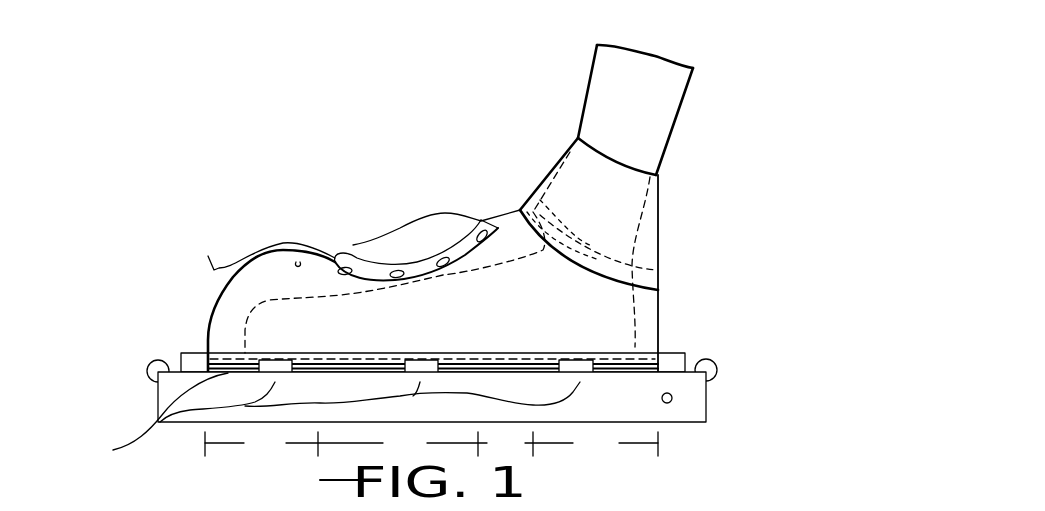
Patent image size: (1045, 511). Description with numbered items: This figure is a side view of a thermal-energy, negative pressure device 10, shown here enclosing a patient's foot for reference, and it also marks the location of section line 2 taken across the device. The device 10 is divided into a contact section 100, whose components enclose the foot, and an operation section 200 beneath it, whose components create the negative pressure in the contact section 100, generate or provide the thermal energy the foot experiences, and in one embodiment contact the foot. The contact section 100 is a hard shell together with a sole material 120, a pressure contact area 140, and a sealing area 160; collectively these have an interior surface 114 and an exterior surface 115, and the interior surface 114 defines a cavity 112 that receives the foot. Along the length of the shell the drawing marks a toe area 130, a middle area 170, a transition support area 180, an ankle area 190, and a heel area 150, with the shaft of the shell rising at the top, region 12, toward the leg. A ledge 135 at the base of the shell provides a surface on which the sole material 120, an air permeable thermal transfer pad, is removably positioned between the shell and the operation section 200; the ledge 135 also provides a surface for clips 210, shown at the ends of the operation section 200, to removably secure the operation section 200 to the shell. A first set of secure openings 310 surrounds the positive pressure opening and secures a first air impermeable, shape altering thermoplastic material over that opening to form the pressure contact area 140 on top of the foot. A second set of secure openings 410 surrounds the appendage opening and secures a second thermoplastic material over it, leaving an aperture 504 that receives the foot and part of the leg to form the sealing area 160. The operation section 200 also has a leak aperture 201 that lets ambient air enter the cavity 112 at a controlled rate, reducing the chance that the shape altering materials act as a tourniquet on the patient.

The section line 2- 2 is at (737, 116).
The thermal-energy, negative pressure device 10 is at (757, 231).
The boot shaft top / leg 12 is at (595, 62).
The contact section 100 is at (128, 150).
The cavity 112 is at (298, 262).
The interior surface 114 is at (216, 335).
The exterior surface 115 is at (218, 338).
The sole material 120 is at (668, 362).
The toe area 130 is at (259, 343).
The ledge 135 is at (645, 367).
The pressure contact area 140 is at (353, 247).
The heel area 150 is at (661, 288).
The sealing area 160 is at (660, 178).
The middle area 170 is at (431, 444).
The transition support area 180 is at (507, 213).
The ankle area 190 is at (596, 443).
The operation section 200 is at (140, 373).
The leak aperture 201 is at (669, 402).
The clips 210 is at (716, 375).
The first set of secure openings 310 is at (388, 263).
The second set of secure openings 410 is at (597, 255).
The aperture 504 is at (663, 172).